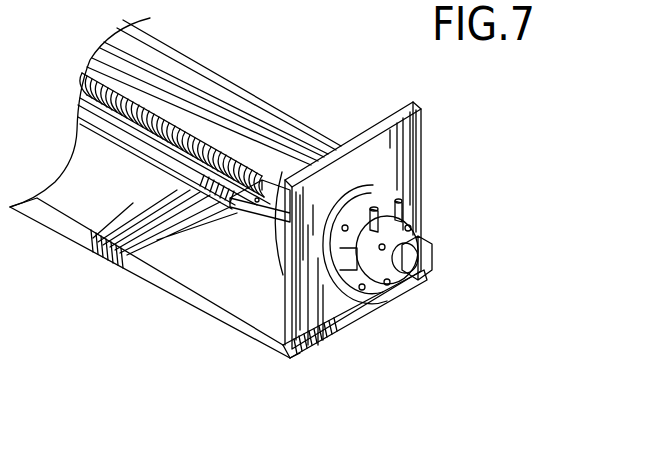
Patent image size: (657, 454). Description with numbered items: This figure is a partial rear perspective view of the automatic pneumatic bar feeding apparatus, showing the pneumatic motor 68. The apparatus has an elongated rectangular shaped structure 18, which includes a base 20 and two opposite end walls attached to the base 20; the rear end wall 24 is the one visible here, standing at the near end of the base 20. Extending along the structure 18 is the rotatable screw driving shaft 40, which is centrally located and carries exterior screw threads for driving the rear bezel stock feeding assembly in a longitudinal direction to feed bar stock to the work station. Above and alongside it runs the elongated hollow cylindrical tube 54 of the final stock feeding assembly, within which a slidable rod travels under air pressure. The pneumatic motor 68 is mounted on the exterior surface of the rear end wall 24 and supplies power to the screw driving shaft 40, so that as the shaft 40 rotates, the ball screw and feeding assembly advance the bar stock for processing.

The elongated rectangular shaped structure 18 is at (290, 361).
The base 20 is at (193, 290).
The rear end wall 24 is at (421, 132).
The screw driving shaft 40 is at (205, 113).
The elongated hollow cylindrical tube 54 is at (178, 52).
The pneumatic motor 68 is at (357, 298).